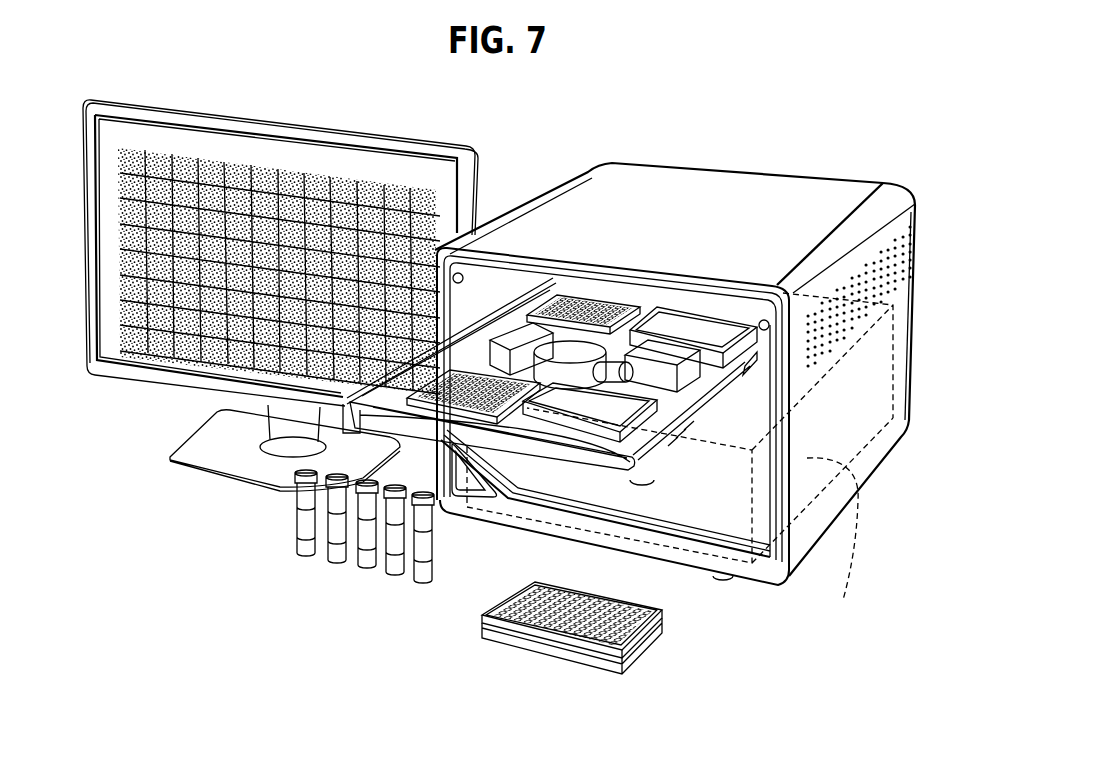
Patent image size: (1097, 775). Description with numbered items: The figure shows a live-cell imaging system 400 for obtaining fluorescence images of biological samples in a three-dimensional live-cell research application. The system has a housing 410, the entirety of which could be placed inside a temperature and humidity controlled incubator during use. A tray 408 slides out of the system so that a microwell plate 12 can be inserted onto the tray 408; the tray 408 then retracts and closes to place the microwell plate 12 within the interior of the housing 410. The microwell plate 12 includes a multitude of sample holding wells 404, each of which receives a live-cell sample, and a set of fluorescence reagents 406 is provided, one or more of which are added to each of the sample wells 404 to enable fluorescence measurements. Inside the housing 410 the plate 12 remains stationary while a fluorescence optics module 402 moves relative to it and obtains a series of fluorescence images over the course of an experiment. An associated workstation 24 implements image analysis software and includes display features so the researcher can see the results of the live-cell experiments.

The workstation 24 is at (449, 137).
The live-cell imaging system 400 is at (833, 175).
The housing 410 is at (737, 183).
The fluorescence optics module 402 is at (686, 487).
The tray 408 is at (532, 440).
The fluorescence reagents 406 is at (423, 580).
The sample holding wells 404 is at (645, 618).
The microwell plate 12 is at (630, 668).